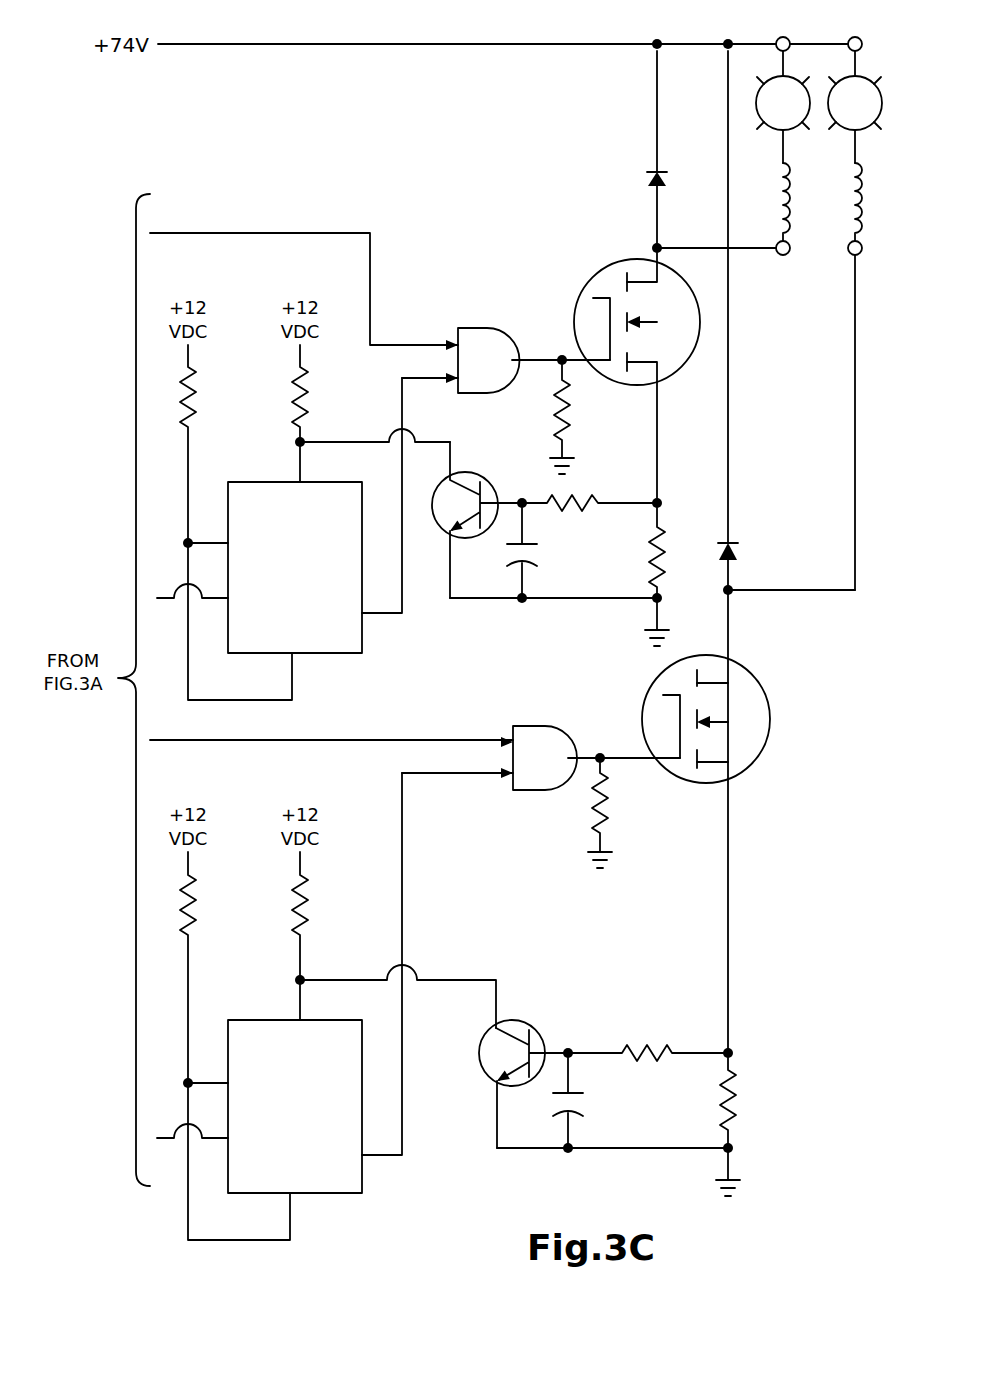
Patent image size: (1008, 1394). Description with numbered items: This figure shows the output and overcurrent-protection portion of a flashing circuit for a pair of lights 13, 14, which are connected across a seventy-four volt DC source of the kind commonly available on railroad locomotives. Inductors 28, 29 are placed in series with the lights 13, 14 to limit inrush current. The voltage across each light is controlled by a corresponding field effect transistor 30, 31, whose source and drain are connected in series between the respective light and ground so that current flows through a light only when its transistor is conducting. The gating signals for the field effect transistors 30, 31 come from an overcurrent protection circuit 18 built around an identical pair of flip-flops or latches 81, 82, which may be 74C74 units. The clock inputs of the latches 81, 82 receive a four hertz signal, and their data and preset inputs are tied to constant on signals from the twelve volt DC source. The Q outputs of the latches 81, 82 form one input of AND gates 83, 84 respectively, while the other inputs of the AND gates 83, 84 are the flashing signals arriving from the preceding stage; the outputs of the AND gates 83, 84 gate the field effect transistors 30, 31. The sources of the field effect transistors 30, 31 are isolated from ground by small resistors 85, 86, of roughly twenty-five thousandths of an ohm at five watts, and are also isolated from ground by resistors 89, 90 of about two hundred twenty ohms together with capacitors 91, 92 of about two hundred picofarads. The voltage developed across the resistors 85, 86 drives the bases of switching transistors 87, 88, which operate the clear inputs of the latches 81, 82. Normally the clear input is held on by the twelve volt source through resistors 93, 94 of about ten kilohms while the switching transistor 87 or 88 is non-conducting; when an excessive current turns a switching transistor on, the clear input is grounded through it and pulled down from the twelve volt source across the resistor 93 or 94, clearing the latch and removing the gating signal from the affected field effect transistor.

The light 13 is at (780, 133).
The light 14 is at (858, 133).
The overcurrent protection circuit 18 is at (438, 275).
The inductor 28 is at (780, 200).
The inductor 29 is at (850, 200).
The field effect transistor 30 is at (576, 300).
The field effect transistor 31 is at (660, 680).
The flip-flop 81 is at (352, 656).
The flip-flop 82 is at (352, 1196).
The AND gate 83 is at (484, 338).
The AND gate 84 is at (552, 742).
The resistor 85 is at (664, 535).
The resistor 86 is at (742, 1103).
The switching transistor 87 is at (494, 484).
The switching transistor 88 is at (540, 1032).
The resistor 89 is at (580, 497).
The resistor 90 is at (640, 1045).
The capacitor 91 is at (536, 540).
The capacitor 92 is at (586, 1092).
The resistor 93 is at (309, 398).
The resistor 94 is at (309, 882).